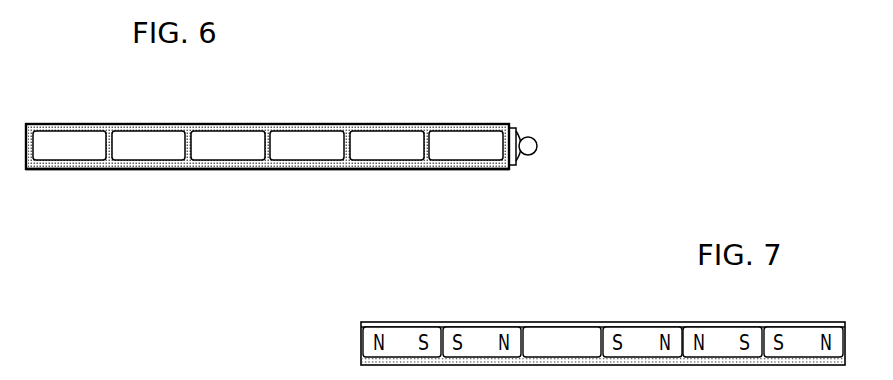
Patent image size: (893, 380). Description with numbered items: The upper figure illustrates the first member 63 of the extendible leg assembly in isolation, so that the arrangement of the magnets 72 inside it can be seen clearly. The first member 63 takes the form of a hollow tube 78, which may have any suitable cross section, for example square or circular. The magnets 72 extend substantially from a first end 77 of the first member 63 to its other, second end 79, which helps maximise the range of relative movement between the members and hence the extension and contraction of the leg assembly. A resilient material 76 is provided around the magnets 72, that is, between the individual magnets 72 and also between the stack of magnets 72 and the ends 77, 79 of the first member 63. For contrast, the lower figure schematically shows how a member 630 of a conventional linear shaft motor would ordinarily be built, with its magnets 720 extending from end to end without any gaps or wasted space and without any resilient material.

In FIG. 6, the first member 63 is at (283, 172).
In FIG. 6, the magnets 72 is at (228, 128).
In FIG. 6, the resilient material 76 is at (426, 128).
In FIG. 6, the first end 77 is at (30, 163).
In FIG. 6, the hollow tube 78 is at (63, 123).
In FIG. 6, the second end 79 is at (503, 126).
In FIG. 7, the member 630 is at (377, 322).
In FIG. 7, the magnets 720 is at (565, 327).